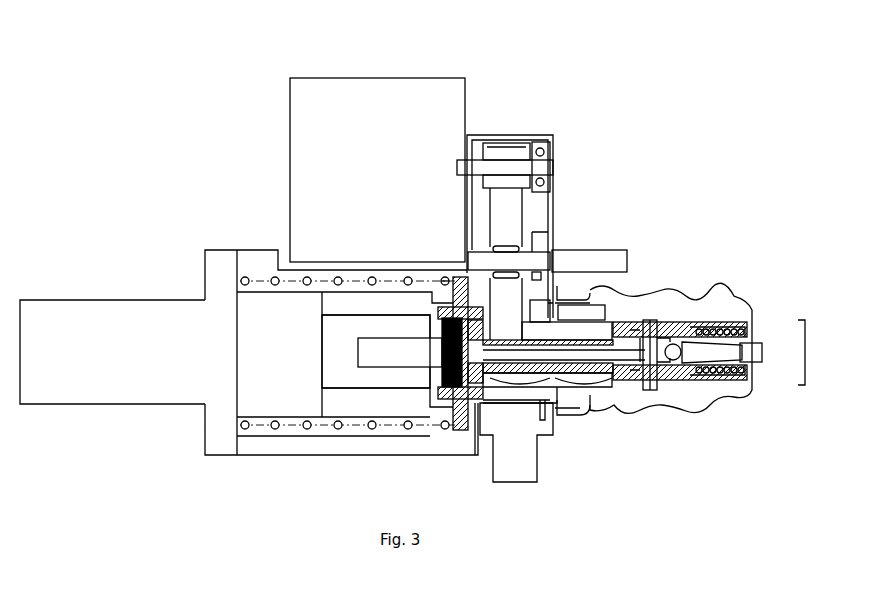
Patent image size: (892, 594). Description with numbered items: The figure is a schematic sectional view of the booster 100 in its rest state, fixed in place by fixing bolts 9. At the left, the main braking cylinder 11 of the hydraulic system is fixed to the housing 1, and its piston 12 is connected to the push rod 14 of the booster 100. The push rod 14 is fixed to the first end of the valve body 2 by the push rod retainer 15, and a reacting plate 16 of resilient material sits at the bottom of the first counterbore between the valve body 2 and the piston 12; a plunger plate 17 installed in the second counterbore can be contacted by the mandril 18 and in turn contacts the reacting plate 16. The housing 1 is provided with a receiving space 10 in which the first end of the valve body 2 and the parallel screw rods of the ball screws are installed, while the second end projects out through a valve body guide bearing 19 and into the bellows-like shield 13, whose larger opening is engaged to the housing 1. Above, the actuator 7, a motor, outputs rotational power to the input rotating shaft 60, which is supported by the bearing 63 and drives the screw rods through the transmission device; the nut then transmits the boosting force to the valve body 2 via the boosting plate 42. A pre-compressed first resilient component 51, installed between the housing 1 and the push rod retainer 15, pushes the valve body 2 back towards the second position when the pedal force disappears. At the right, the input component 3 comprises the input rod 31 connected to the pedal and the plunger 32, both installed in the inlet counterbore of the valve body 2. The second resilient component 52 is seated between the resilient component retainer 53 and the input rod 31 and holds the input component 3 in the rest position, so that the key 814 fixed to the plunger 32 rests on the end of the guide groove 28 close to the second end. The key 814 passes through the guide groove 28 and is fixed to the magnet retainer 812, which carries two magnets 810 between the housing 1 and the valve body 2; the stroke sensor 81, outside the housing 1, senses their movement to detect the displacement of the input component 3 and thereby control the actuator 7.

The housing 1 is at (250, 262).
The main braking cylinder 11 is at (88, 403).
The piston 12 is at (350, 325).
The boosting plate 42 is at (437, 281).
The first resilient component 51 is at (305, 430).
The push rod 14 is at (400, 370).
The push rod retainer 15 is at (447, 398).
The reacting plate 16 is at (450, 420).
The plunger plate 17 is at (466, 435).
The actuator 7 is at (463, 108).
The receiving space 10 is at (540, 211).
The input rotating shaft 60 is at (545, 163).
The bearing 63 is at (552, 148).
The fixing bolts 9 is at (612, 258).
The valve body guide bearing 19 is at (578, 296).
The shield 13 is at (638, 290).
The magnet retainer 812 is at (628, 400).
The mandril 18 is at (528, 382).
The magnets 810 is at (562, 412).
The stroke sensor 81 is at (525, 458).
The guide groove 28 is at (655, 320).
The key 814 is at (660, 392).
The valve body 2 is at (690, 396).
The resilient component retainer 53 is at (712, 327).
The second resilient component 52 is at (740, 318).
The input rod 31 is at (755, 325).
The plunger 32 is at (752, 381).
The input component 3 is at (805, 352).
The booster 100 is at (661, 173).